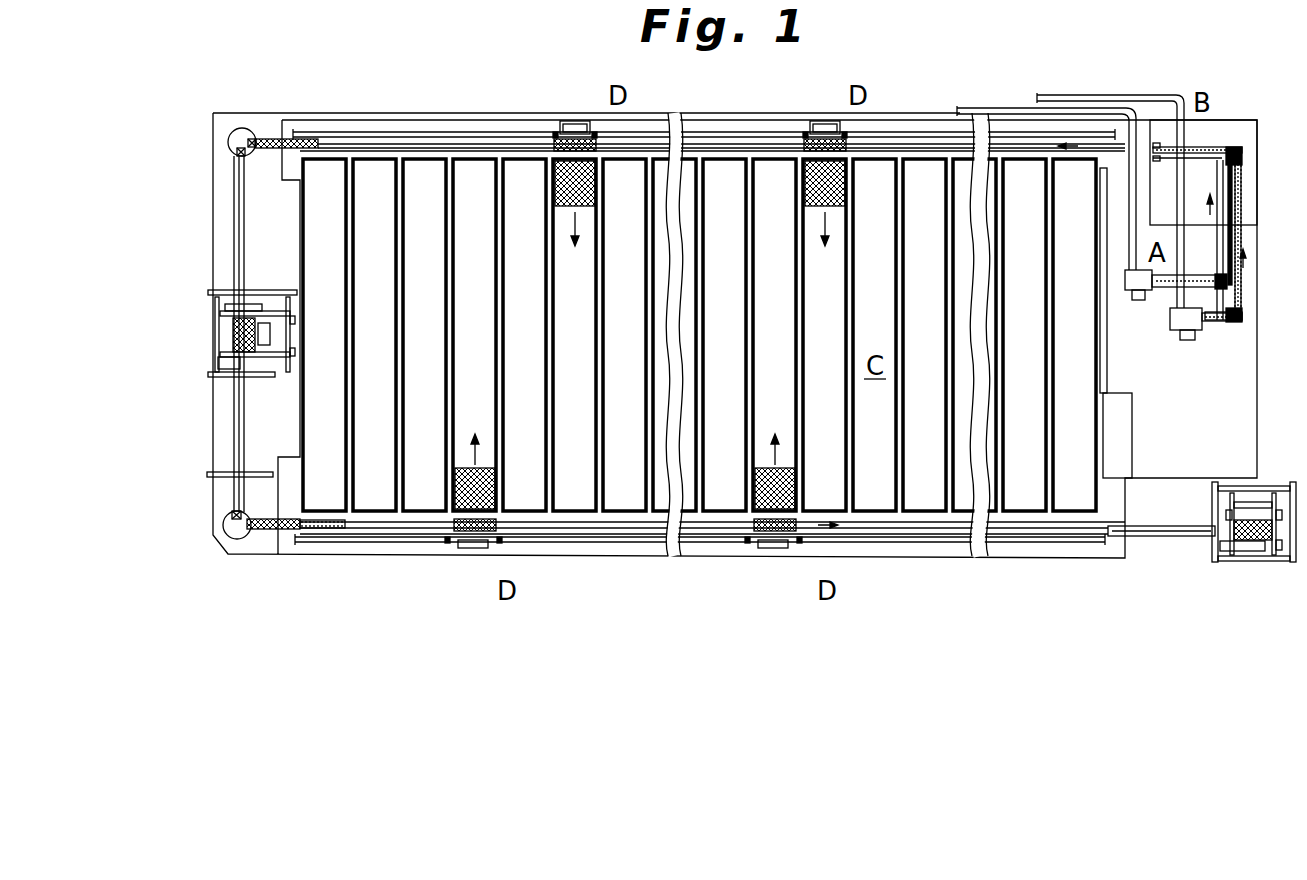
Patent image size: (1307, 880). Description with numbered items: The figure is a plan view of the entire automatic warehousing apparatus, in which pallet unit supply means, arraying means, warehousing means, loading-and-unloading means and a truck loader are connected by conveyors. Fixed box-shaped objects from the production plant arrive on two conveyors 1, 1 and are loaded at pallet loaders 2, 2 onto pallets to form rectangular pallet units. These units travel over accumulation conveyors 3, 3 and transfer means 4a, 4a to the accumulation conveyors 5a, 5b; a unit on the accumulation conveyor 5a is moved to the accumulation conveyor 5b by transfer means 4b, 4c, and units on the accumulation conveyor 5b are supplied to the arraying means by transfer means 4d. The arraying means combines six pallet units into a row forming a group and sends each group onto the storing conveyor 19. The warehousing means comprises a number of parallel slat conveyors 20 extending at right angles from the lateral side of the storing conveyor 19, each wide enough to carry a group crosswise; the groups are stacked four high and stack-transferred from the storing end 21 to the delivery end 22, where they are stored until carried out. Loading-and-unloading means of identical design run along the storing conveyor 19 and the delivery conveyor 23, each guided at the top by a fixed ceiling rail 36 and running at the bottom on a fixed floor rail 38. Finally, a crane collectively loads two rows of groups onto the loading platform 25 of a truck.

The conveyor 1 is at (990, 108).
The pallet loader 2 is at (1137, 298).
The accumulation conveyor 3 is at (1197, 276).
The transfer means 4a is at (1240, 320).
The transfer means 4b is at (1220, 121).
The transfer means 4c is at (1240, 162).
The transfer means 4d is at (1237, 121).
The accumulation conveyor 5a is at (1238, 240).
The accumulation conveyor 5b is at (1240, 280).
The storing conveyor 19 is at (885, 146).
The slat conveyor 20 is at (724, 335).
The storing end 21 is at (722, 172).
The delivery end 22 is at (700, 523).
The delivery conveyor 23 is at (883, 536).
The loading platform 25 is at (222, 374).
The ceiling rail 36 is at (924, 133).
The floor rail 38 is at (948, 544).